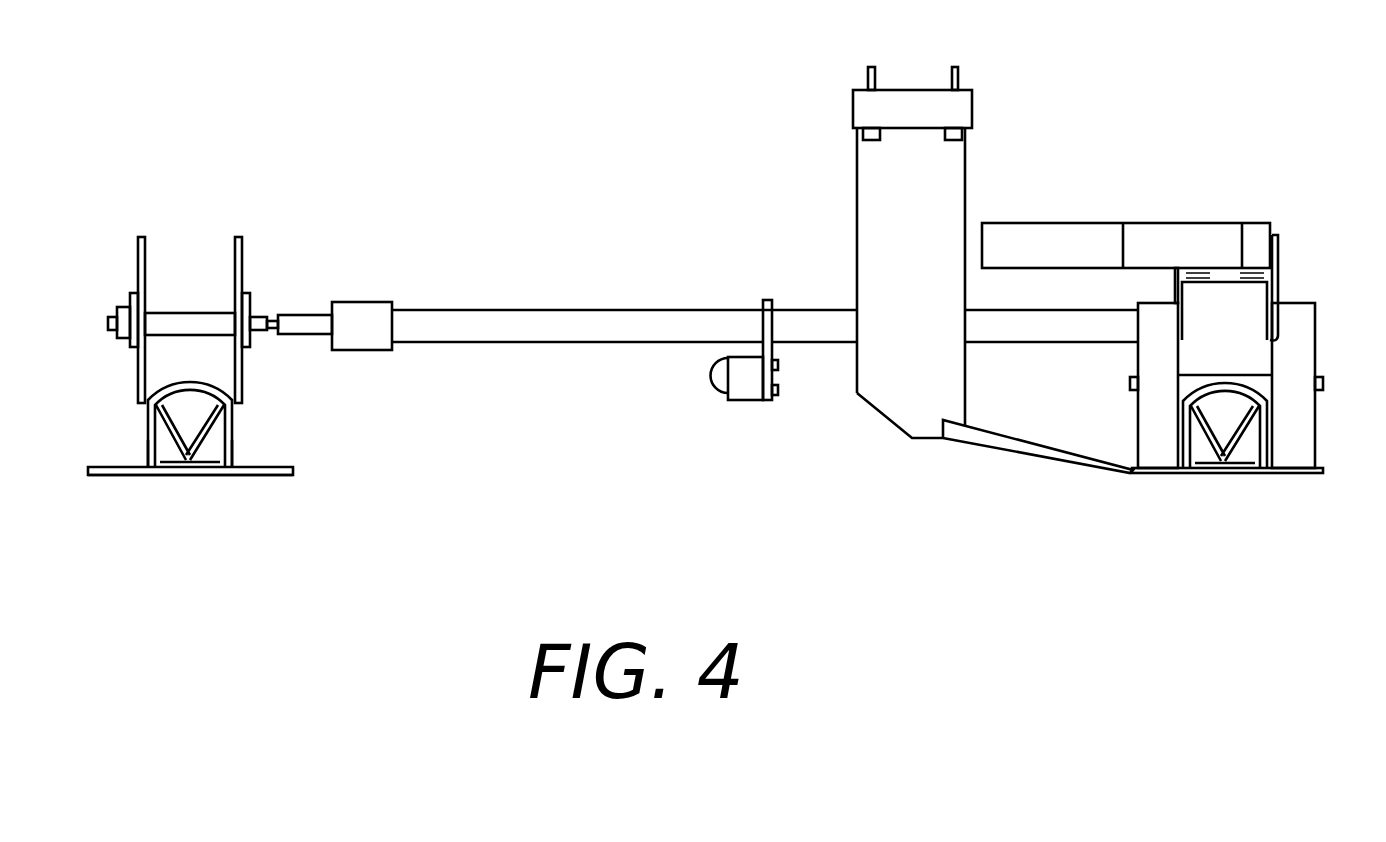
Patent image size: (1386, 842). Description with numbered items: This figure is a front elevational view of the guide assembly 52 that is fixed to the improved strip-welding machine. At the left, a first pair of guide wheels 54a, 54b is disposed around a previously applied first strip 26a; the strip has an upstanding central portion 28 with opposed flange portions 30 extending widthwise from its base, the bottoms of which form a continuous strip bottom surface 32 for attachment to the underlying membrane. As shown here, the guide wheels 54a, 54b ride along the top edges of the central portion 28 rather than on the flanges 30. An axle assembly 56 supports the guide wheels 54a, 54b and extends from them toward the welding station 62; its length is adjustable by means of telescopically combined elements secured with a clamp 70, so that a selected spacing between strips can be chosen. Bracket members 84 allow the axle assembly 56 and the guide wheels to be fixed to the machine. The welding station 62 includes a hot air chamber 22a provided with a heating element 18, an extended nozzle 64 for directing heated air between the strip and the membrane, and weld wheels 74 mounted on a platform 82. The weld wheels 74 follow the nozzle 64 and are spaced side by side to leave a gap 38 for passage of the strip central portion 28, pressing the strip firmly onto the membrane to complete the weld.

The heating element 18 is at (970, 90).
The chamber 22a is at (857, 188).
The first strip 26a is at (232, 427).
The central portion 28 is at (148, 428).
The flange portions 30 is at (272, 467).
The strip bottom surface 32 is at (137, 476).
The gap 38 is at (1262, 378).
The guide assembly 52 is at (610, 200).
The guide wheel 54a is at (138, 252).
The guide wheel 54b is at (242, 258).
The axle assembly 56 is at (590, 308).
The welding station 62 is at (928, 472).
The extended nozzle 64 is at (1073, 463).
The clamp 70 is at (367, 302).
The weld wheels 74 is at (1163, 452).
The platform 82 is at (1185, 223).
The bracket members 84 is at (755, 400).